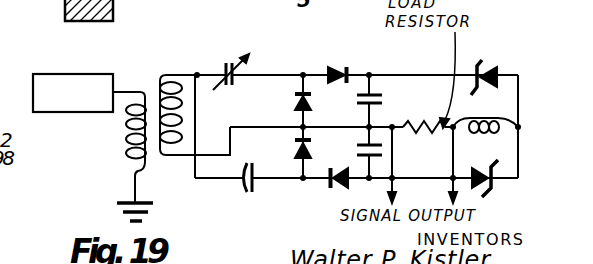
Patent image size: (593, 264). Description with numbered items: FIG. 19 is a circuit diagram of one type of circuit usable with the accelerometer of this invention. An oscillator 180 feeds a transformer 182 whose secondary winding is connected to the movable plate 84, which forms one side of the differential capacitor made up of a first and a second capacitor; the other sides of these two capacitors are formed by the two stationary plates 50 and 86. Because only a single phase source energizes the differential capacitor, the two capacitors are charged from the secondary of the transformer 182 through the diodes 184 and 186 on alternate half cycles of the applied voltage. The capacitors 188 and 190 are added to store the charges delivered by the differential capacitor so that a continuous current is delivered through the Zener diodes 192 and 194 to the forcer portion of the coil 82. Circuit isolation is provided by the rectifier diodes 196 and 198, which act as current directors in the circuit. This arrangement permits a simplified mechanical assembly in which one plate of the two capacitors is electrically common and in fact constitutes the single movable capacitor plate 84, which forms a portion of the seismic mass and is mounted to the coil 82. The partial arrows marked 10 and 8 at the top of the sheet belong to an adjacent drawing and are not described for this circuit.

The oscillator 180 is at (98, 79).
The transformer 182 is at (127, 140).
The movable plate 84 is at (223, 68).
The stationary plate 86 is at (256, 183).
The stationary plate 50 is at (235, 83).
The diode 184 is at (297, 83).
The rectifier diode 198 is at (321, 130).
The rectifier diode 196 is at (341, 67).
The diode 186 is at (346, 123).
The capacitor 188 is at (377, 92).
The capacitor 190 is at (384, 157).
The coil 82 is at (490, 139).
The Zener diode 192 is at (512, 52).
The Zener diode 194 is at (497, 187).
The direction arrow 10 is at (250, 13).
The direction arrow 8 is at (300, 17).